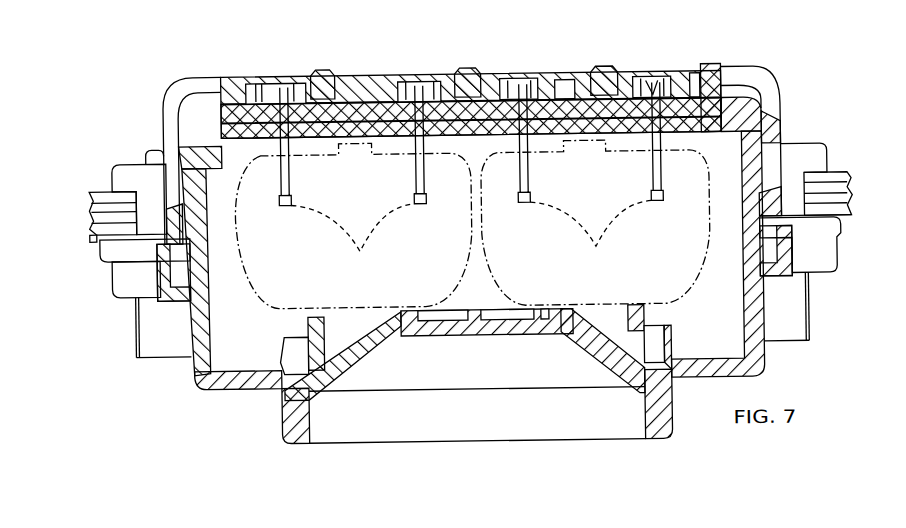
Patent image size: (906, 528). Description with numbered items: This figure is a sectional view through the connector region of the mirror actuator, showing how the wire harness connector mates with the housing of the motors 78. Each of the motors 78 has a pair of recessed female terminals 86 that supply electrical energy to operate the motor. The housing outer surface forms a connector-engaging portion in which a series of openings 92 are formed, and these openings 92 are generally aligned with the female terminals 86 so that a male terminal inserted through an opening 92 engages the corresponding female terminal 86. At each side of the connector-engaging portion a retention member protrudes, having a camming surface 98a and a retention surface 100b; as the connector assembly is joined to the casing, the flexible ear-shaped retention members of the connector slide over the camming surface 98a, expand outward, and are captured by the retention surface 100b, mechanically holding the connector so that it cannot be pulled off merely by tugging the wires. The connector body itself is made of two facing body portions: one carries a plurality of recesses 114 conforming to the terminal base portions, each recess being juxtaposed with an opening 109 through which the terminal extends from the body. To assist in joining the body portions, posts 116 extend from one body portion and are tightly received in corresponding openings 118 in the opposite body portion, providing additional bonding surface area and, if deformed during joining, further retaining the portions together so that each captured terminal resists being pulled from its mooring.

The motor 78 is at (253, 178).
The female terminal 86 is at (472, 224).
The opening 92 is at (292, 153).
The camming surface 98a is at (158, 150).
The retention surface 100b is at (167, 190).
The opening 109 is at (652, 82).
The recess 114 is at (712, 72).
The post 116 is at (337, 70).
The opening 118 is at (327, 70).